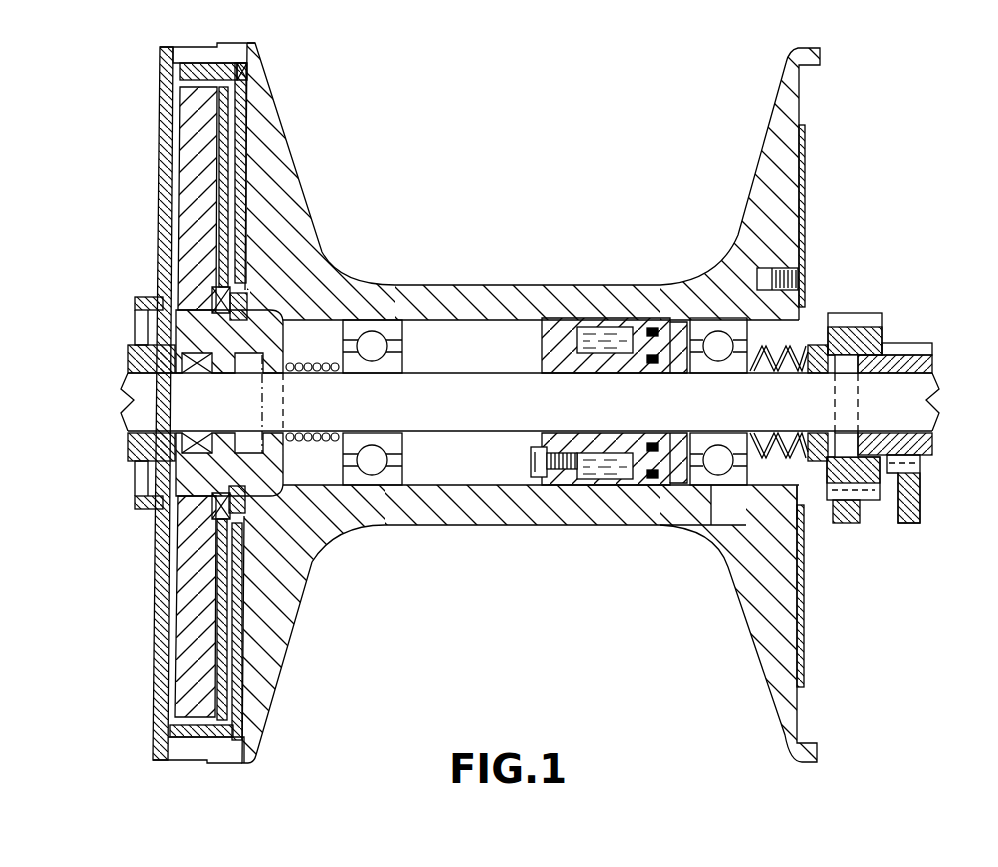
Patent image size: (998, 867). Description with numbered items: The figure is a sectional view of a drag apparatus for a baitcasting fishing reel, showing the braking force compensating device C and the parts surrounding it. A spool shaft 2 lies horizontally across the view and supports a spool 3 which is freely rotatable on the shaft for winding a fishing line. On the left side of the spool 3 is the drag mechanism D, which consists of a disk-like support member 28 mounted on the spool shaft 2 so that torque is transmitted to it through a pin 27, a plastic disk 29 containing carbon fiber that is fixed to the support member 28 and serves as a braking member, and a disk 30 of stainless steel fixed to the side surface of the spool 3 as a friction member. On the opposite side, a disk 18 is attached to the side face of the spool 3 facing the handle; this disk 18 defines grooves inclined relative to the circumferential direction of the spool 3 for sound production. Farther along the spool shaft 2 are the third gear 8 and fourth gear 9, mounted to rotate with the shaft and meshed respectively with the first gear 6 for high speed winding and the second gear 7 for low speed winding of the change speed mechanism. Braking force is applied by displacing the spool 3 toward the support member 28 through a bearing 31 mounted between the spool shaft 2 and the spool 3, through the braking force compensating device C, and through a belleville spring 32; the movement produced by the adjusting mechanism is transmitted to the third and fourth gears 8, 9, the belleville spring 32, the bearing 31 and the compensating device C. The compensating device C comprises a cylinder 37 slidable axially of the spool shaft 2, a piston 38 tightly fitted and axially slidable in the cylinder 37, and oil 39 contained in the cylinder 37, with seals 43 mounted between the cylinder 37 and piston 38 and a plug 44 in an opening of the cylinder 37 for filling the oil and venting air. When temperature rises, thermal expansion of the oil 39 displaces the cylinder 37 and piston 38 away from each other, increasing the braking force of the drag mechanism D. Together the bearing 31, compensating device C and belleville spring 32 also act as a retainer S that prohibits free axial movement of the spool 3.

The spool shaft 2 is at (371, 403).
The spool 3 is at (450, 525).
The drag mechanism D is at (246, 131).
The support member 28 is at (183, 238).
The plastic disk 29 is at (223, 220).
The disk 30 is at (248, 173).
The pin 27 is at (258, 405).
The braking force compensating device C is at (579, 295).
The cylinder 37 is at (565, 318).
The piston 38 is at (643, 318).
The oil 39 is at (610, 487).
The seals 43 is at (656, 484).
The plug 44 is at (540, 470).
The belleville spring 32 is at (797, 347).
The bearing 31 is at (708, 490).
The disk 18 is at (806, 148).
The fourth gear 9 is at (870, 313).
The third gear 8 is at (905, 343).
The first gear 6 is at (922, 505).
The second gear 7 is at (862, 510).
The retainer S is at (804, 486).